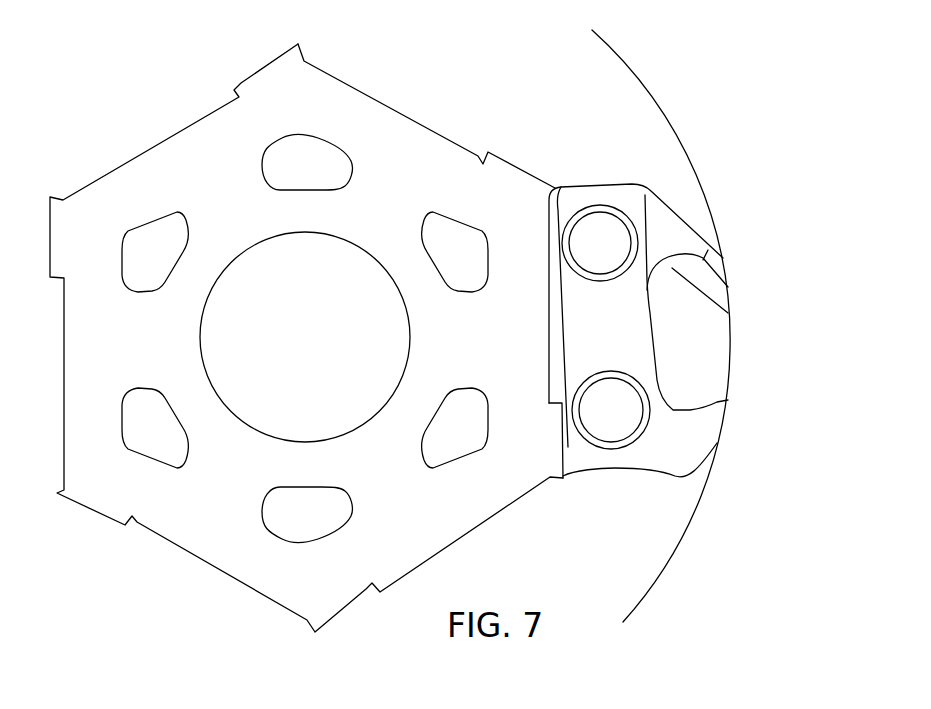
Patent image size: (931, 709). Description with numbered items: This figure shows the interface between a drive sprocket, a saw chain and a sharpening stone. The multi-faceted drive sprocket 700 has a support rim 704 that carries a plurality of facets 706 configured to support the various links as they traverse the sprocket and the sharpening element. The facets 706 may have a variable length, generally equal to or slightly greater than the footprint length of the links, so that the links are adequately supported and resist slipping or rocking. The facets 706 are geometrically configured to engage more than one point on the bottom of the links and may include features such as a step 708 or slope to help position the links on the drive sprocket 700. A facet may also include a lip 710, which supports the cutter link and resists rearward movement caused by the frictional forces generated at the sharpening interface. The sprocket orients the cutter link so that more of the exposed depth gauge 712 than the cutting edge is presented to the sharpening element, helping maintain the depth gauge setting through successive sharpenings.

The multi-faceted drive sprocket 700 is at (188, 56).
The support rim 704 is at (182, 177).
The facets 706 is at (393, 110).
The step 708 is at (521, 168).
The lip 710 is at (555, 187).
The exposed depth gauge 712 is at (738, 398).